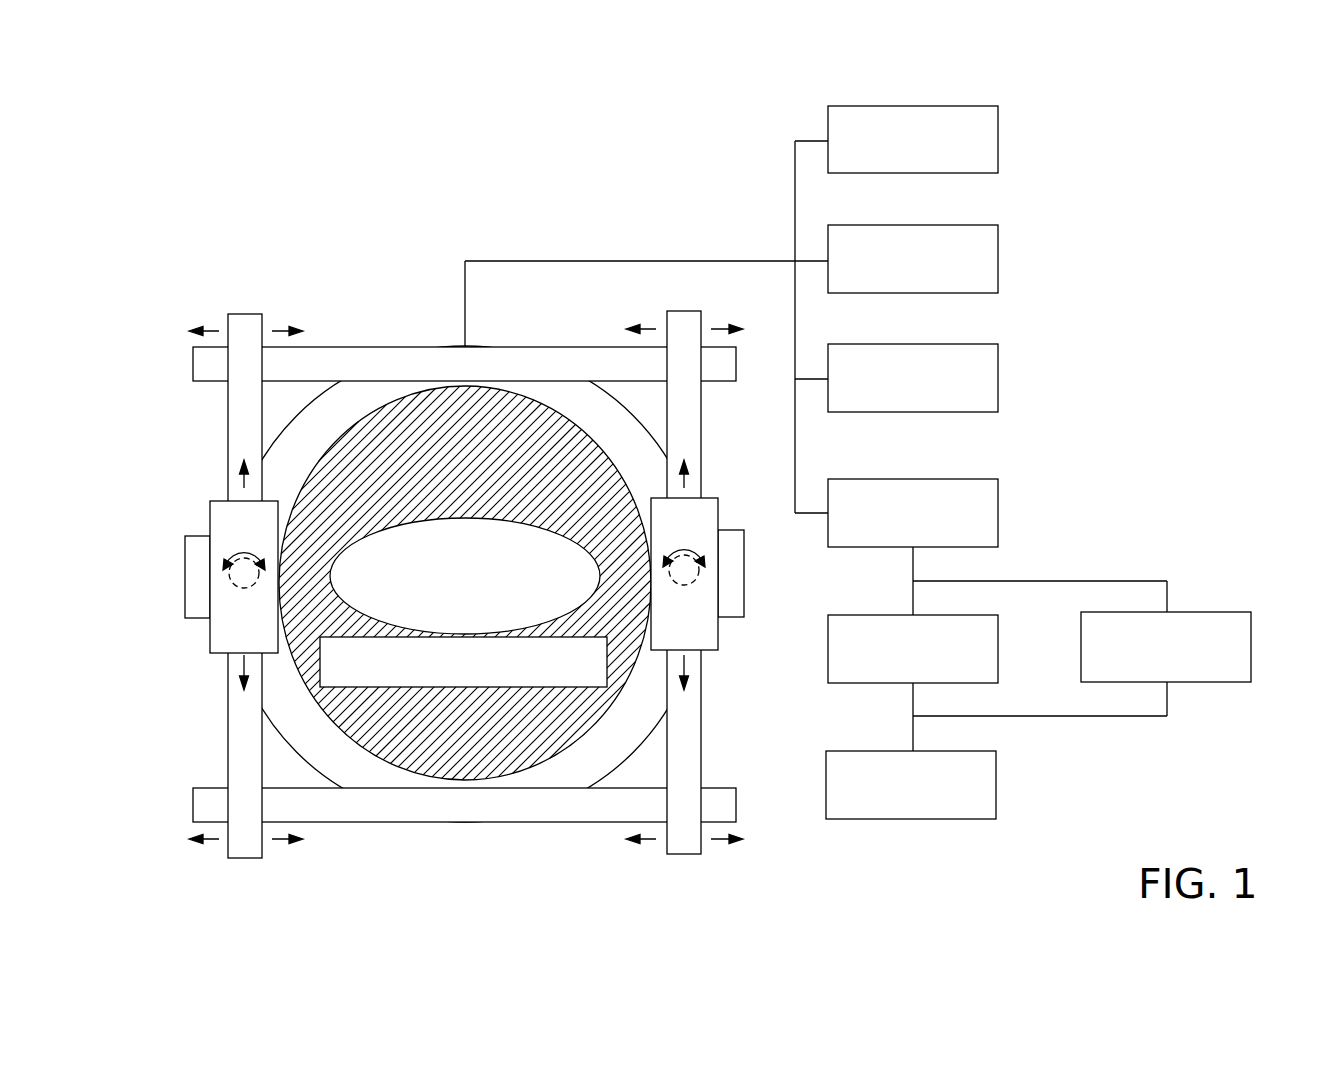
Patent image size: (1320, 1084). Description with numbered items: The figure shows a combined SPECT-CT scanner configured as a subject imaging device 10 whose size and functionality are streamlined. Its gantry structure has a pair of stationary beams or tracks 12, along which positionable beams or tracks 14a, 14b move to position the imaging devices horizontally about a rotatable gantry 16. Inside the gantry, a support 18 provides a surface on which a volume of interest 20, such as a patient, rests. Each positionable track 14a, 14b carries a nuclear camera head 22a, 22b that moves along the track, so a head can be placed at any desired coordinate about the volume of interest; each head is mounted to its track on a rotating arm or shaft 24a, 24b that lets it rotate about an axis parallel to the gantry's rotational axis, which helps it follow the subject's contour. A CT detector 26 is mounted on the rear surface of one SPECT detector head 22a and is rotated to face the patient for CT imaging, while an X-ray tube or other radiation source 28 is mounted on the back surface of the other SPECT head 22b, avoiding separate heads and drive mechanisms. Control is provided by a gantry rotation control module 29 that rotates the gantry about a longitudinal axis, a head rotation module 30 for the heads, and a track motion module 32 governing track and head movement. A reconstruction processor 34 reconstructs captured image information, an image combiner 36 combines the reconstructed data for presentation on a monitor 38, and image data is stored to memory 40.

The subject imaging device 10 is at (176, 203).
The stationary beams or tracks 12 is at (214, 383).
The positionable beam or track 14a is at (683, 856).
The positionable beam or track 14b is at (236, 313).
The rotatable gantry 16 is at (322, 751).
The support 18 is at (463, 662).
The volume of interest 20 is at (465, 576).
The nuclear camera head 22a is at (684, 574).
The nuclear camera head 22b is at (244, 577).
The rotating arm or shaft 24a is at (719, 627).
The rotating arm or shaft 24b is at (243, 578).
The CT detector 26 is at (745, 537).
The X-ray tube or other radiation source 28 is at (194, 537).
The gantry rotation control module 29 is at (998, 138).
The head rotation module 30 is at (998, 257).
The track motion control module 32 is at (998, 379).
The reconstruction processor 34 is at (998, 512).
The image combiner 36 is at (998, 647).
The monitor 38 is at (997, 783).
The memory 40 is at (1186, 612).